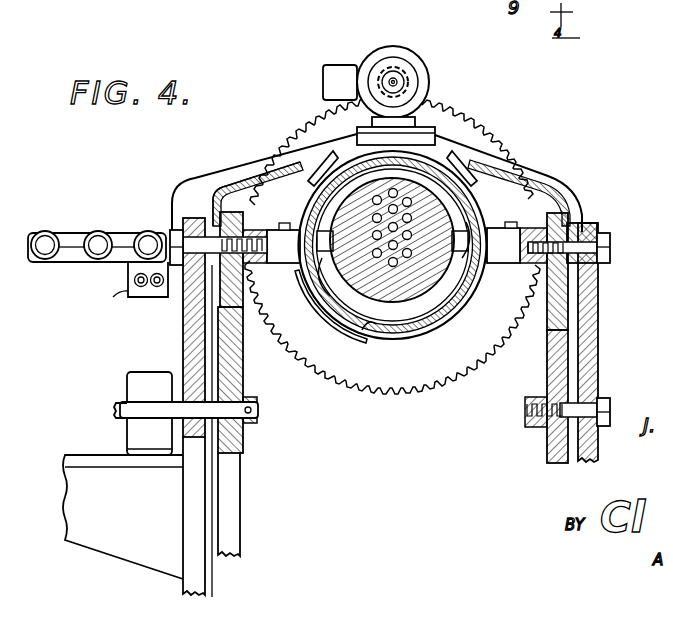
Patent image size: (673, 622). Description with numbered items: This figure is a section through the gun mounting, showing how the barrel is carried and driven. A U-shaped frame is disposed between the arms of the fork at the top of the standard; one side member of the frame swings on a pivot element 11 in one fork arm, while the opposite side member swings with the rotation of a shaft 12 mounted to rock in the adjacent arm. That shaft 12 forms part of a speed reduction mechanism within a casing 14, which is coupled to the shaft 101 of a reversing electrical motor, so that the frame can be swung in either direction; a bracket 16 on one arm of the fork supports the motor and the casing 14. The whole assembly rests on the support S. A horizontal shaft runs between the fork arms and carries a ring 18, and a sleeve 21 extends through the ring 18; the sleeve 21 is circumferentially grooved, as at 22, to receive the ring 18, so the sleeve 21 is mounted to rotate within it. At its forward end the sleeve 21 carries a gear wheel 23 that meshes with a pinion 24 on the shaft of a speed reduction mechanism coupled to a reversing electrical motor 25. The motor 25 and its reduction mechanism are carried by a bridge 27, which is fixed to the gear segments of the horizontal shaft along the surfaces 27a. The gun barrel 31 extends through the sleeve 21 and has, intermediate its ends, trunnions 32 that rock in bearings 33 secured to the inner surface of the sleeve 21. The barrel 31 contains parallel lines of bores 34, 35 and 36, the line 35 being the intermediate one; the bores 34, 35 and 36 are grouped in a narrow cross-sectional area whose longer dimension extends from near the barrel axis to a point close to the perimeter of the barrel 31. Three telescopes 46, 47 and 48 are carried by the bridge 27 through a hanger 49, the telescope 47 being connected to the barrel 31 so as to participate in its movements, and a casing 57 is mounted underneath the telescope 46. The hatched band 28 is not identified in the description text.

The pivot element 11 is at (612, 412).
The shaft 12 is at (258, 408).
The casing 14 is at (147, 373).
The bracket 16 is at (78, 517).
The ring 18 is at (388, 331).
The sleeve 21 is at (368, 321).
The circumferential groove 22 is at (331, 315).
The gear wheel 23 is at (415, 377).
The pinion 24 is at (395, 66).
The reversing electrical motor 25 is at (428, 72).
The bridge 27 is at (548, 184).
The surfaces 27a is at (582, 228).
The liner band 28 is at (300, 168).
The gun barrel 31 is at (427, 289).
The trunnions 32 is at (303, 260).
The bearings 33 is at (323, 284).
The line of bores 34 is at (375, 196).
The intermediate line of bores 35 is at (394, 189).
The line of bores 36 is at (411, 197).
The telescope 46 is at (148, 232).
The telescope 47 is at (97, 232).
The telescope 48 is at (44, 232).
The hanger 49 is at (222, 174).
The casing 57 is at (131, 294).
The shaft 101 is at (115, 409).
The support S is at (178, 582).